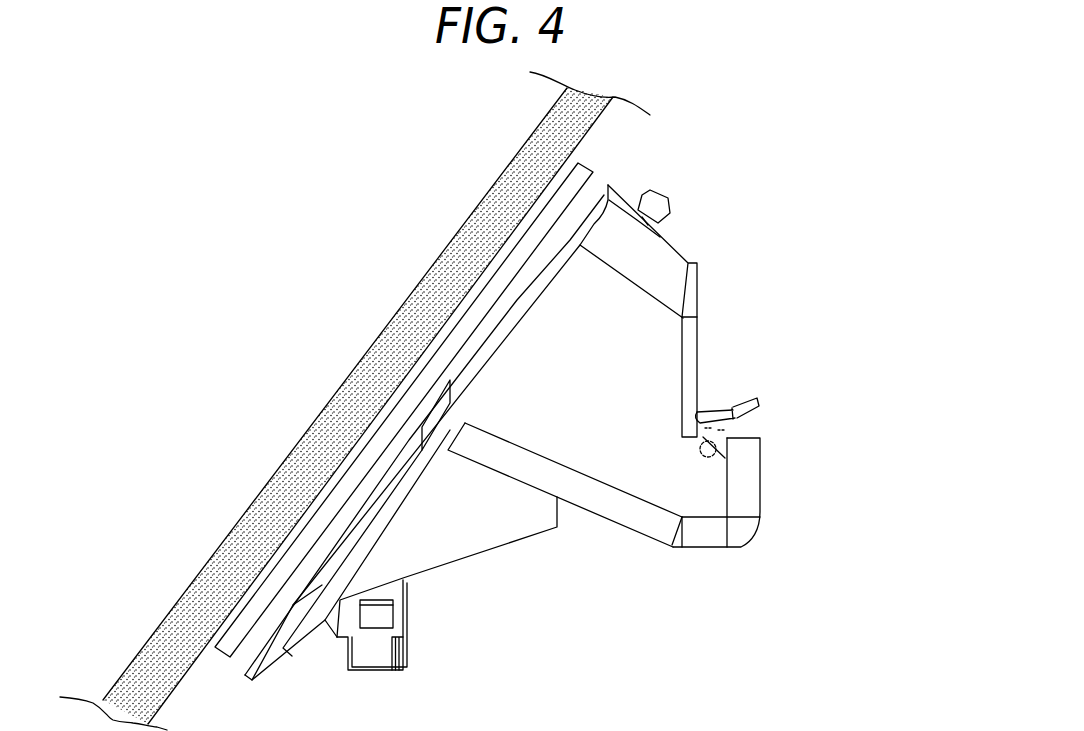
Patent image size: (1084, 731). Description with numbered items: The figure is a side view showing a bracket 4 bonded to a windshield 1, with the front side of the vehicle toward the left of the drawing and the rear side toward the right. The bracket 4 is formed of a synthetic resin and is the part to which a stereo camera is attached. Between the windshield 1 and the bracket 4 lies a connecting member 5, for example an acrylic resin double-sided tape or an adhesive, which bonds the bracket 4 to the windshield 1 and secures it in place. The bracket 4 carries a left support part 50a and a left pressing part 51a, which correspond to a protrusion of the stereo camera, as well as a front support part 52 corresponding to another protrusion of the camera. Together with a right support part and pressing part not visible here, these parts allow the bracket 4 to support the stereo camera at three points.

The windshield 1 is at (396, 311).
The connecting member 5 is at (595, 173).
The bracket 4 is at (753, 533).
The support part 50a is at (730, 440).
The pressing part 51a is at (722, 402).
The support part 52 is at (408, 620).